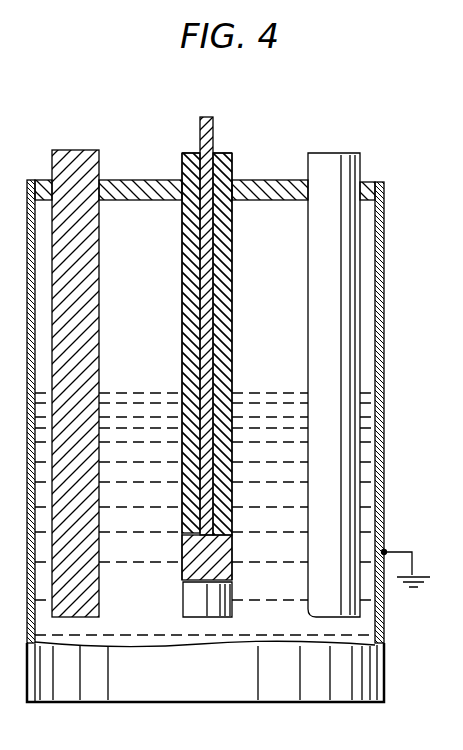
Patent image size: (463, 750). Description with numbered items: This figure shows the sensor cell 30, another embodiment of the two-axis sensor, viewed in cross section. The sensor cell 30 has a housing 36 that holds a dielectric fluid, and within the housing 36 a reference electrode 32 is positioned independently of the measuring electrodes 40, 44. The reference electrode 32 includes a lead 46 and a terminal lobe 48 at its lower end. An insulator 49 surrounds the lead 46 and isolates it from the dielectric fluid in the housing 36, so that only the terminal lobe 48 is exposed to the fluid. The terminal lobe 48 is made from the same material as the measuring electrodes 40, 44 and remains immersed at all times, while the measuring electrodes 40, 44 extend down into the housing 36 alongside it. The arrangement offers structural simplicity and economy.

The sensor cell 30 is at (314, 110).
The reference electrode 32 is at (233, 158).
The housing 36 is at (383, 366).
The measuring electrode 40 is at (100, 165).
The measuring electrode 44 is at (361, 165).
The lead 46 is at (214, 248).
The terminal lobe 48 is at (183, 600).
The insulator 49 is at (257, 303).